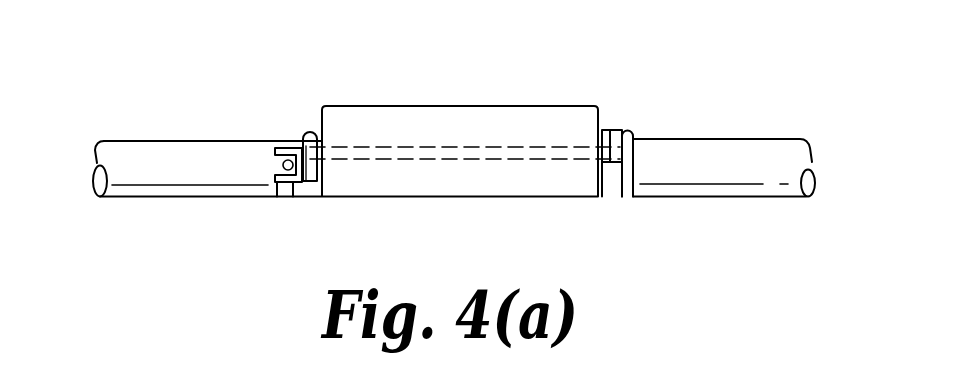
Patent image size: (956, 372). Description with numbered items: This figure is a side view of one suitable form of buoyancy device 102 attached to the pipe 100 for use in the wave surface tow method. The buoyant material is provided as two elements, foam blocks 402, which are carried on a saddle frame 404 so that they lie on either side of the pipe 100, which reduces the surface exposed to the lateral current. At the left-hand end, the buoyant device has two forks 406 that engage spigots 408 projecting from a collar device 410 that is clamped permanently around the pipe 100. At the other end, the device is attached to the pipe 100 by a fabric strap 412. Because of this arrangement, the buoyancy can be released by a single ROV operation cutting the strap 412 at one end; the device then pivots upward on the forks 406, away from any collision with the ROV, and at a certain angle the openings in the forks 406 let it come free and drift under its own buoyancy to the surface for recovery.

The pipe 100 is at (683, 139).
The buoyancy device 102 is at (501, 58).
The foam blocks 402 is at (378, 106).
The saddle frame 404 is at (602, 130).
The forks 406 is at (290, 148).
The spigots 408 is at (277, 166).
The collar device 410 is at (283, 196).
The fabric strap 412 is at (617, 180).